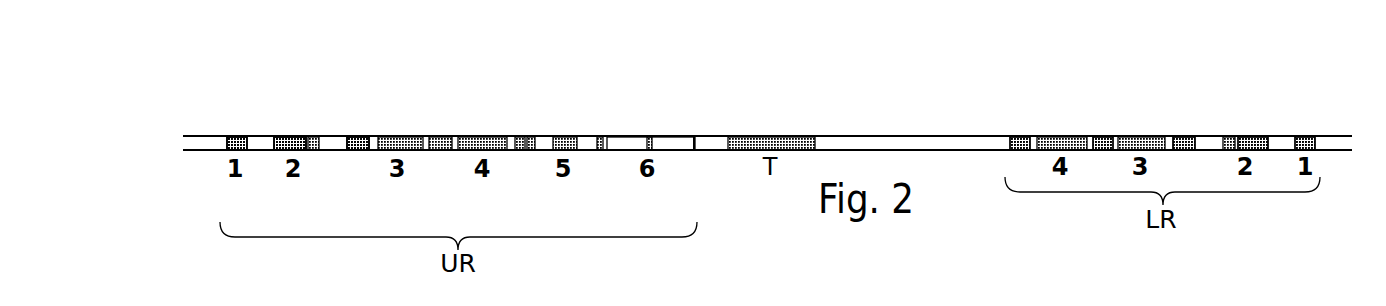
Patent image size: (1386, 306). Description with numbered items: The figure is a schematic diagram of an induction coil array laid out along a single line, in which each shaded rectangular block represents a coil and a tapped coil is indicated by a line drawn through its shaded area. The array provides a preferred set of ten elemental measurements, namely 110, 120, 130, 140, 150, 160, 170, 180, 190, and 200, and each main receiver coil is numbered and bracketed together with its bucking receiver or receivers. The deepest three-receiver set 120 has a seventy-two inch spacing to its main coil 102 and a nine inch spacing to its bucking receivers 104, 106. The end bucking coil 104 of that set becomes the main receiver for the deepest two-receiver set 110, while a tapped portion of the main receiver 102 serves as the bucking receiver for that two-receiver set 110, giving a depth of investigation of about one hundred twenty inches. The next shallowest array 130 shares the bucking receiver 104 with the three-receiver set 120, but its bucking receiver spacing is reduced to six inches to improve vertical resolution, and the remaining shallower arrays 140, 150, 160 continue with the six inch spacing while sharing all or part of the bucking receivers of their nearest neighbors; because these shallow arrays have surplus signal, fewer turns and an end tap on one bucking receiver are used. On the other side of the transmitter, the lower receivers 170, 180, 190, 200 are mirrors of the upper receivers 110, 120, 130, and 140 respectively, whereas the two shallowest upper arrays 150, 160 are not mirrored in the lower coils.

The main coil 102 is at (283, 152).
The end bucking coil 104 is at (234, 152).
The bucking receiver 106 is at (360, 152).
The two-receiver set 110 is at (227, 128).
The three-receiver set 120 is at (226, 82).
The next shallowest array 130 is at (347, 127).
The elemental array 140 is at (437, 103).
The shallow upper receiver array 150 is at (533, 128).
The shallowest upper receiver array 160 is at (607, 128).
The lower receiver array 170 is at (1258, 85).
The lower receiver array 180 is at (1229, 42).
The lower receiver array 190 is at (1126, 67).
The lower receiver array 200 is at (1046, 88).